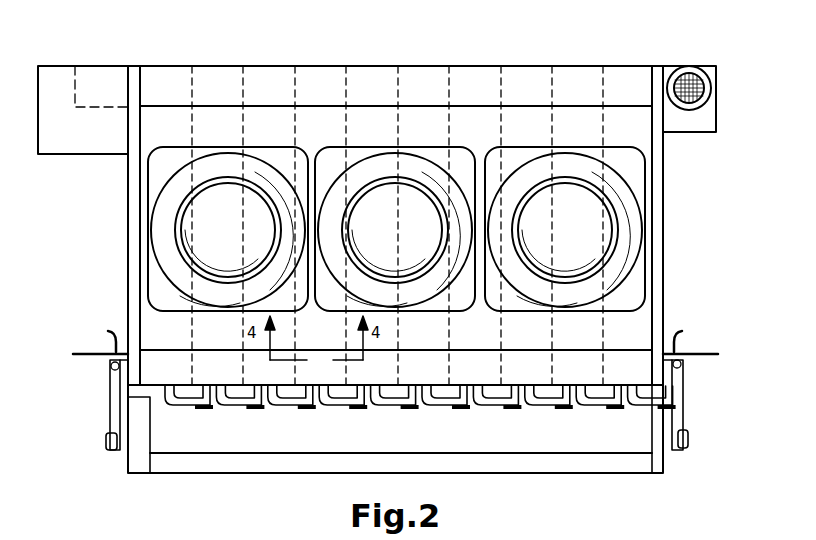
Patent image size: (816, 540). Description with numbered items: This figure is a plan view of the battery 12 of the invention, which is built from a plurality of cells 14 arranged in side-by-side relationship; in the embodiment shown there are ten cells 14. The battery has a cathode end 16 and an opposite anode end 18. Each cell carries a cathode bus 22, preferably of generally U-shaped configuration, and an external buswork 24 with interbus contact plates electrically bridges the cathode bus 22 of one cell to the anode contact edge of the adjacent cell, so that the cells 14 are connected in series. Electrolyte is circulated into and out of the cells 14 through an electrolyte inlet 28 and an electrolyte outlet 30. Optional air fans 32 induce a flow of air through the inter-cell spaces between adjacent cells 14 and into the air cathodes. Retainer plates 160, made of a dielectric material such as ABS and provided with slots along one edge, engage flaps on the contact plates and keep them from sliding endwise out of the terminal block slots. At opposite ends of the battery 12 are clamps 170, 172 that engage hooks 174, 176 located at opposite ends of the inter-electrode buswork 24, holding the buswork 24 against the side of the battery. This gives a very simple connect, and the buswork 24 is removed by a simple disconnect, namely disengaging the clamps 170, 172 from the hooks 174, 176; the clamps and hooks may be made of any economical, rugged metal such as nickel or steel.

The battery 12 is at (288, 48).
The cells 14 is at (375, 82).
The cathode end 16 is at (695, 226).
The anode end 18 is at (96, 275).
The cathode bus 22 is at (180, 405).
The external buswork 24 is at (600, 465).
The electrolyte inlet 28 is at (105, 85).
The electrolyte outlet 30 is at (54, 92).
The air fans 32 is at (570, 158).
The retainer plates 160 is at (315, 440).
The clamp 170 is at (112, 410).
The clamp 172 is at (678, 412).
The hook 174 is at (108, 440).
The hook 176 is at (688, 441).